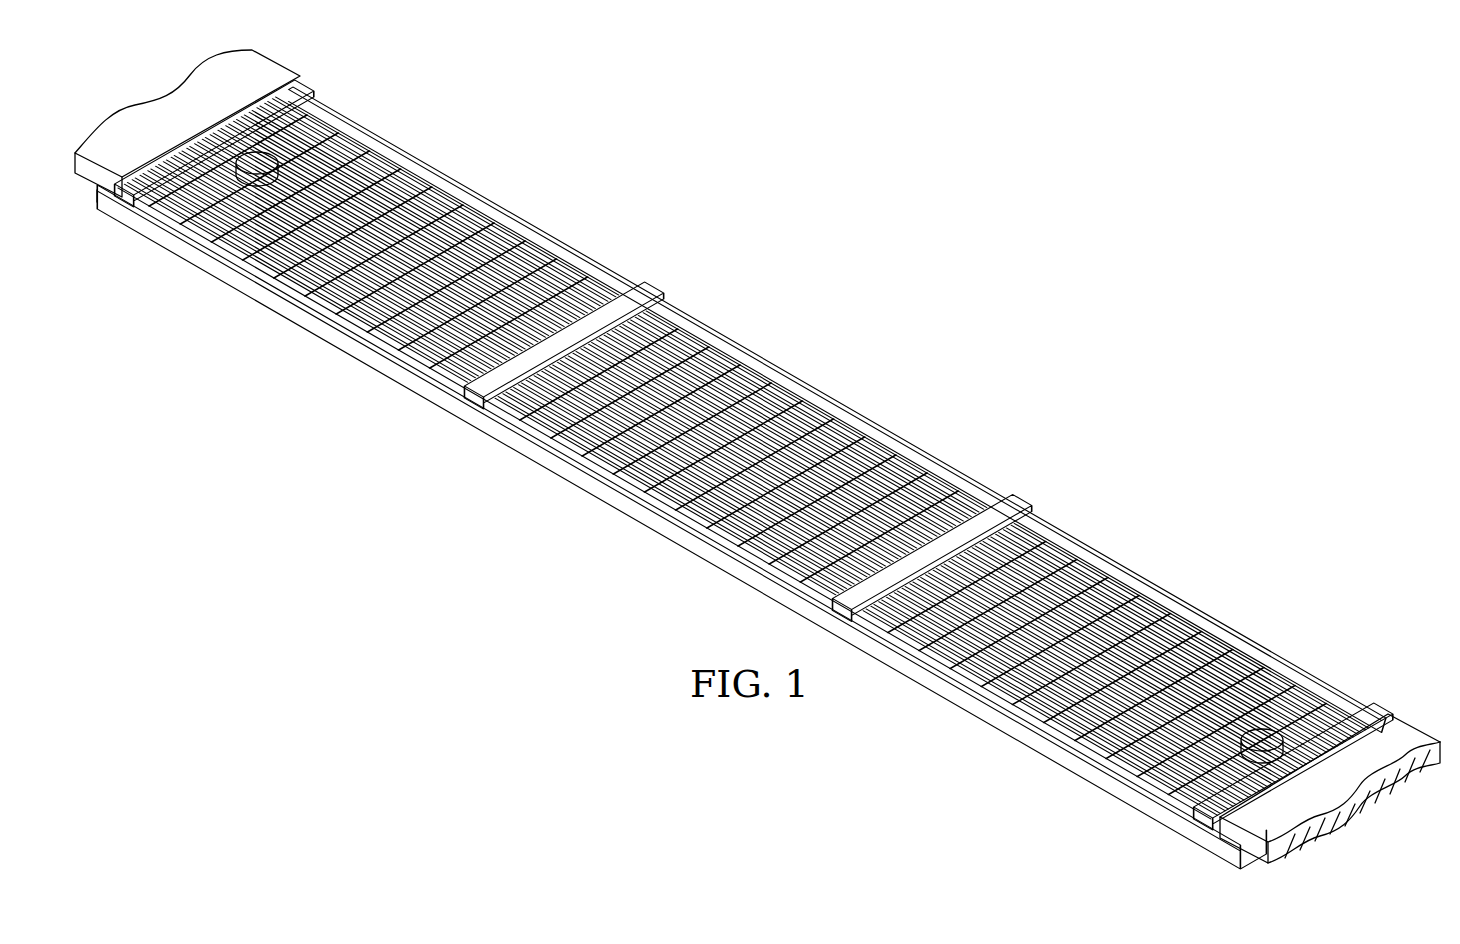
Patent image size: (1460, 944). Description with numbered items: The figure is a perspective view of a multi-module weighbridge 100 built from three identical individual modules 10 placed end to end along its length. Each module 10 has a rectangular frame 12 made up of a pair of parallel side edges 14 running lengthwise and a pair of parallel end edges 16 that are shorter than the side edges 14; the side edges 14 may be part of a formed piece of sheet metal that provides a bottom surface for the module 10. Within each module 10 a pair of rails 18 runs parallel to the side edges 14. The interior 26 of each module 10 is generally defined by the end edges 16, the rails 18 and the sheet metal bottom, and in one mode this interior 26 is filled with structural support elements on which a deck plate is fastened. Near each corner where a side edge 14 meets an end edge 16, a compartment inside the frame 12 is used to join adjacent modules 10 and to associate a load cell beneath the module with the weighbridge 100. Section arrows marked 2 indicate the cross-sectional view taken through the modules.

The multi-module weighbridge 100 is at (1005, 292).
The module 10 is at (747, 461).
The rectangular frame 12 is at (1215, 823).
The side edges 14 is at (353, 110).
The end edges 16 is at (290, 86).
The rails 18 is at (385, 160).
The interior 26 is at (398, 222).
The section line of FIG. 2 is at (532, 592).